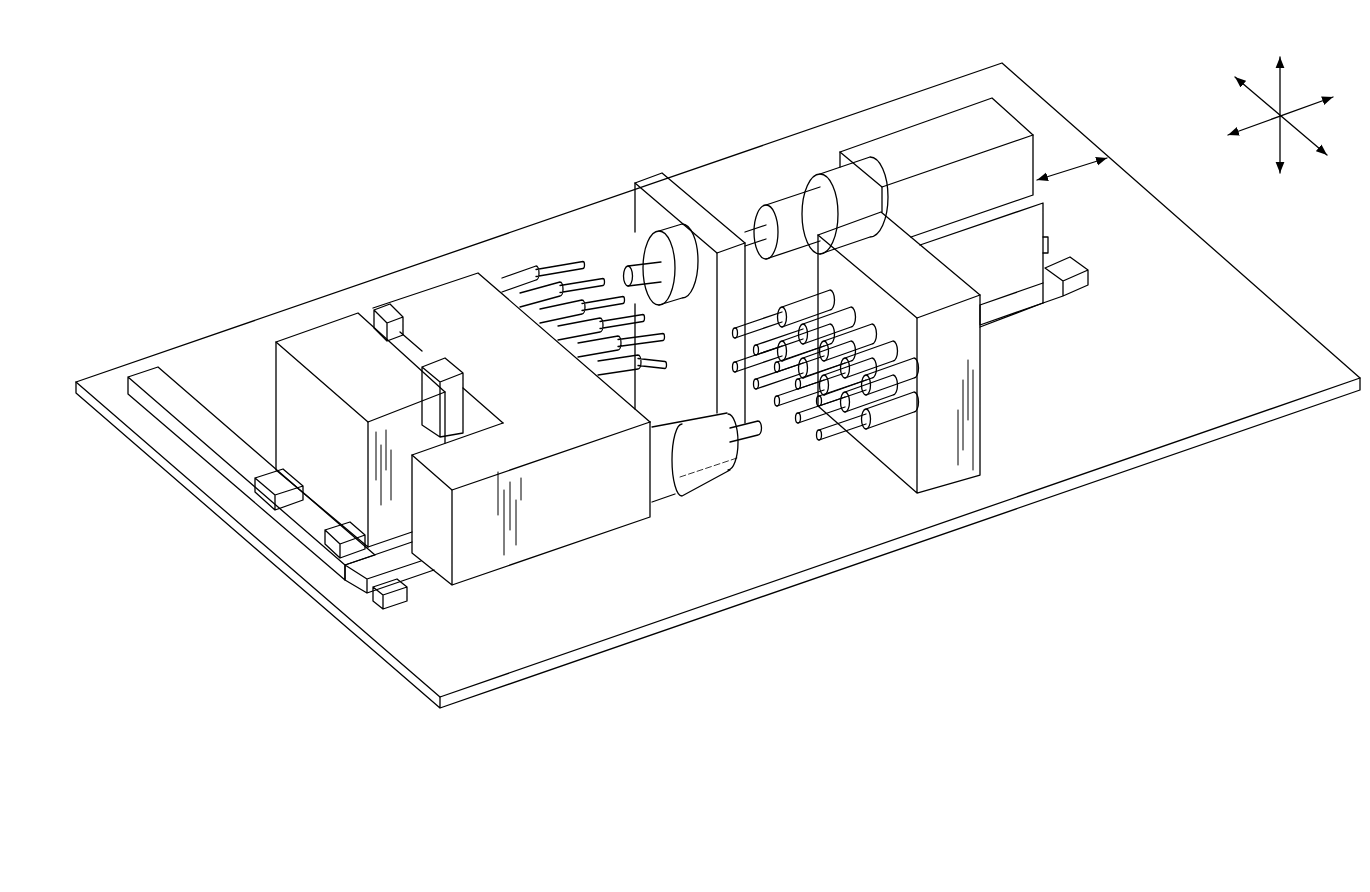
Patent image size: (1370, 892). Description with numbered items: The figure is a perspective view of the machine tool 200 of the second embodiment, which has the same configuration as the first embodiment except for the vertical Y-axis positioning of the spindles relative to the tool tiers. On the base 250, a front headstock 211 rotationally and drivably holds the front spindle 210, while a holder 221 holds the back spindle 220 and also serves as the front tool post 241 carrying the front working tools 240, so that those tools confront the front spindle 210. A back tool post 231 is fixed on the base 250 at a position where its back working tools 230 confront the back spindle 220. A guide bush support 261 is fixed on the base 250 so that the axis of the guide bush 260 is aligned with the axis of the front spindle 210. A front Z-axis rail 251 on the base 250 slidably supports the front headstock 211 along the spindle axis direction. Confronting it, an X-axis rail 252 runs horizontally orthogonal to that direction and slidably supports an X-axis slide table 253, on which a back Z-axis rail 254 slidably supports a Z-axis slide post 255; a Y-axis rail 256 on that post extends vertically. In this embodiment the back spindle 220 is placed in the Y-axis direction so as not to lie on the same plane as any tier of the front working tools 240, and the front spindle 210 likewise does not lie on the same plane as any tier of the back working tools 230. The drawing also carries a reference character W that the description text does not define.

The machine tool 200 is at (296, 68).
The front spindle 210 is at (792, 210).
The front headstock 211 is at (926, 136).
The back spindle 220 is at (708, 455).
The holder 221 is at (535, 439).
The back working tools 230 is at (830, 433).
The back tool post 231 is at (933, 473).
The front working tools 240 is at (600, 280).
The front tool post 241 is at (468, 310).
The base 250 is at (1143, 420).
The front Z-axis rail 251 is at (1073, 270).
The X-axis rail 252 is at (146, 377).
The X-axis slide table 253 is at (368, 568).
The back Z-axis rail 254 is at (333, 532).
The Z-axis slide post 255 is at (342, 350).
The Y-axis rail 256 is at (437, 365).
The guide bush 260 is at (648, 243).
The guide bush support 261 is at (690, 203).
The optical axis element W is at (640, 267).